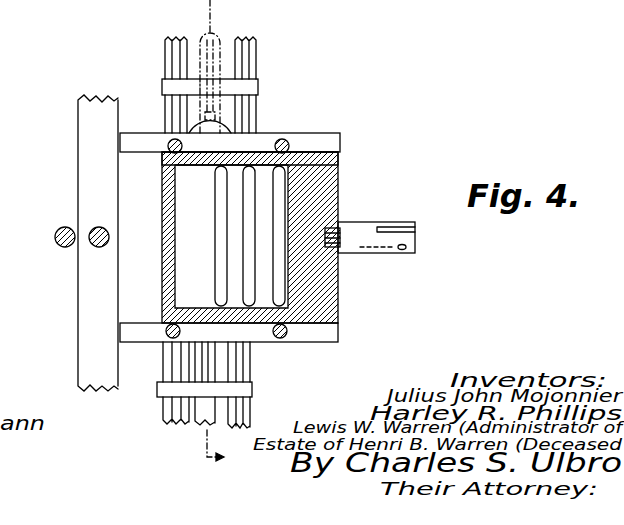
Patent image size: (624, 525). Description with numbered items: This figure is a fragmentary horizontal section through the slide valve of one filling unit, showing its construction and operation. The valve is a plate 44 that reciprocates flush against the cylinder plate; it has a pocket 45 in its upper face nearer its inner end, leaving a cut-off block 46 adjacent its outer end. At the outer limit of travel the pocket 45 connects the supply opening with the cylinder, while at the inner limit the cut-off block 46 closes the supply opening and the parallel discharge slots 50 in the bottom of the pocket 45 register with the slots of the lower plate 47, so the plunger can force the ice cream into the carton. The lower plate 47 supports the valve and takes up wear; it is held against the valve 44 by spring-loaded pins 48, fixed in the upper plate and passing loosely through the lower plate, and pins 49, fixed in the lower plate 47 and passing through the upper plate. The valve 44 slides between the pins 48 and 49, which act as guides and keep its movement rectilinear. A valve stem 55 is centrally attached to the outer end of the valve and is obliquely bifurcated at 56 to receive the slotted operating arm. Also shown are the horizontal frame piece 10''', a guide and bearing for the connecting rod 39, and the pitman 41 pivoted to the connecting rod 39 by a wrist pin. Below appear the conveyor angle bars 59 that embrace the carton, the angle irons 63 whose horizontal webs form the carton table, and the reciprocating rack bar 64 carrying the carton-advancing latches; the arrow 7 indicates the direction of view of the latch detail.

The second horizontal frame piece 10''' is at (63, 243).
The connecting rod 39 is at (100, 232).
The pitman 41 is at (58, 246).
The valve plate 44 is at (165, 337).
The pocket 45 is at (297, 150).
The cut-off block 46 is at (328, 168).
The lower plate 47 is at (325, 143).
The pins 48 is at (293, 135).
The pins 49 is at (170, 143).
The discharge slots 50 is at (262, 212).
The valve stem 55 is at (357, 249).
The bifurcation 56 is at (390, 226).
The angle bars 59 is at (168, 58).
The angle irons 63 is at (188, 20).
The rack bar 64 is at (207, 370).
The section line arrow 7 is at (227, 448).